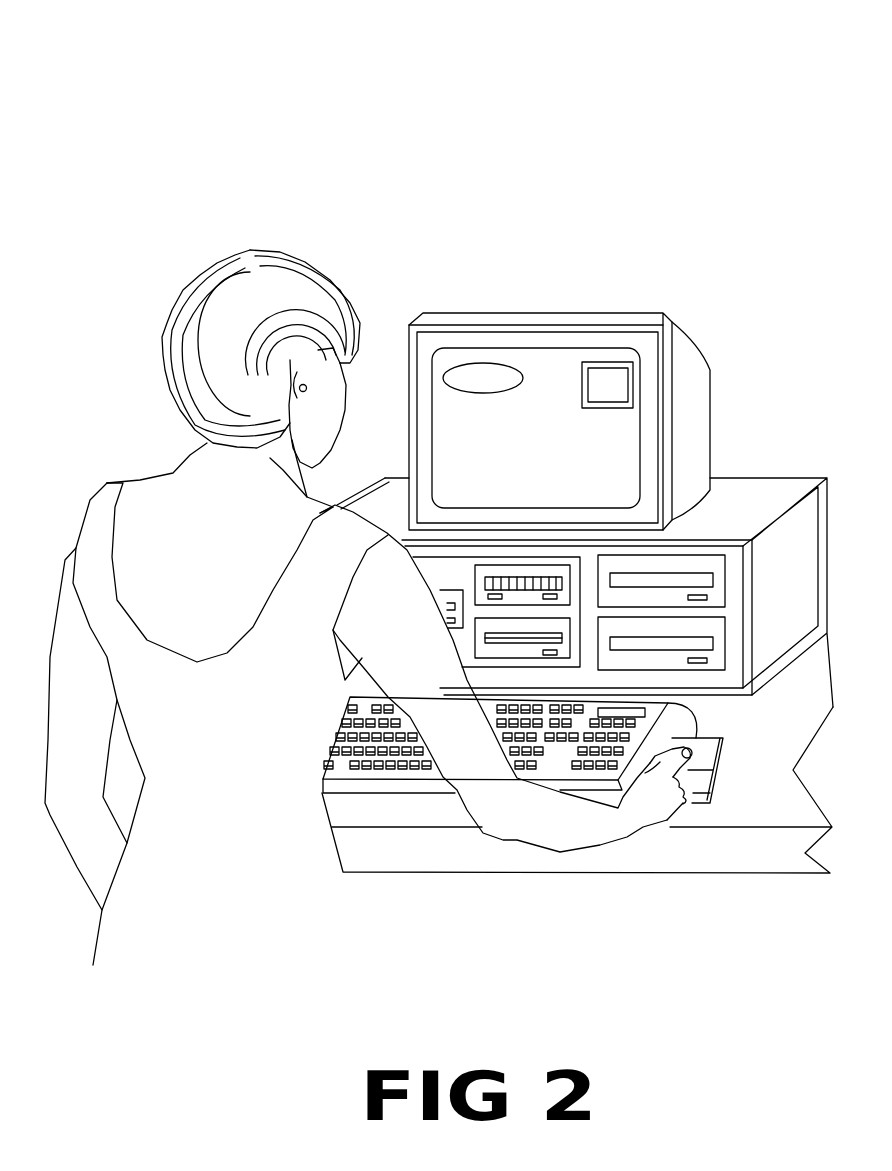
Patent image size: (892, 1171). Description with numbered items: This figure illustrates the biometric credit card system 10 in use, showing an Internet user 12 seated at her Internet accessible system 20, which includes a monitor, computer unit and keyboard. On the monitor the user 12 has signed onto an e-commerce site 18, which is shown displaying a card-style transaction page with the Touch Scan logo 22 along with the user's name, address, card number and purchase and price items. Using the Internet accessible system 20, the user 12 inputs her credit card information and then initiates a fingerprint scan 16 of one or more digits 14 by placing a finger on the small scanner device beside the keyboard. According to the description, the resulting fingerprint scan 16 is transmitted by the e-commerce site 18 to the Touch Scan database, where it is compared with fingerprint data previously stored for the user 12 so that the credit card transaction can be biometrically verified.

The biometric credit card system 10 is at (438, 166).
The Internet user 12 is at (237, 290).
The digits 14 is at (658, 803).
The fingerprint scan 16 is at (710, 760).
The e-commerce site 18 is at (545, 362).
The Internet accessible system 20 is at (453, 315).
The Touch Scan logo 22 is at (613, 370).